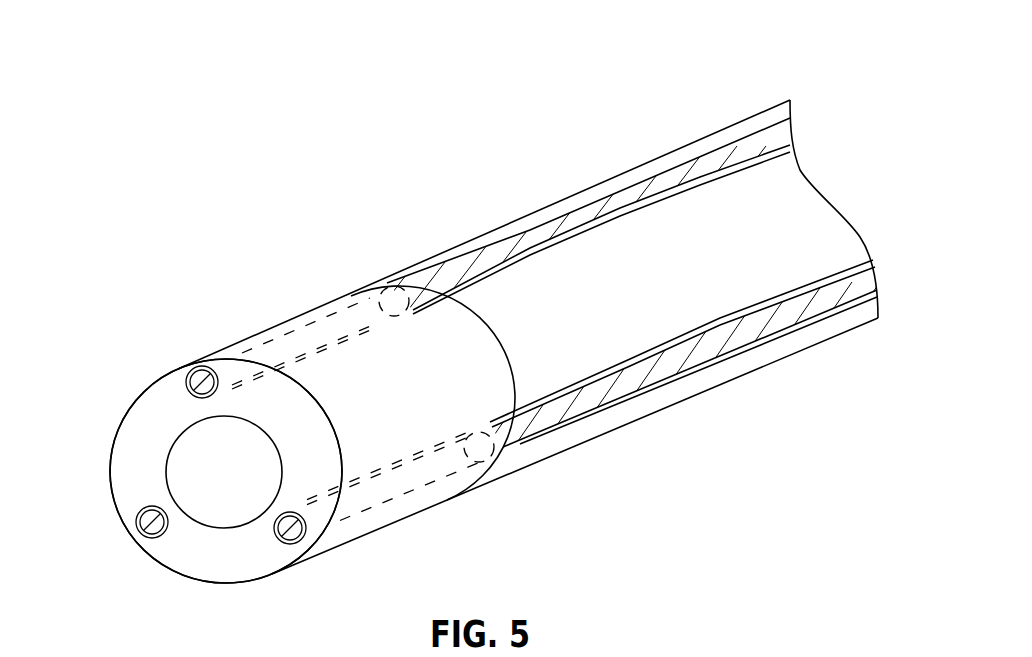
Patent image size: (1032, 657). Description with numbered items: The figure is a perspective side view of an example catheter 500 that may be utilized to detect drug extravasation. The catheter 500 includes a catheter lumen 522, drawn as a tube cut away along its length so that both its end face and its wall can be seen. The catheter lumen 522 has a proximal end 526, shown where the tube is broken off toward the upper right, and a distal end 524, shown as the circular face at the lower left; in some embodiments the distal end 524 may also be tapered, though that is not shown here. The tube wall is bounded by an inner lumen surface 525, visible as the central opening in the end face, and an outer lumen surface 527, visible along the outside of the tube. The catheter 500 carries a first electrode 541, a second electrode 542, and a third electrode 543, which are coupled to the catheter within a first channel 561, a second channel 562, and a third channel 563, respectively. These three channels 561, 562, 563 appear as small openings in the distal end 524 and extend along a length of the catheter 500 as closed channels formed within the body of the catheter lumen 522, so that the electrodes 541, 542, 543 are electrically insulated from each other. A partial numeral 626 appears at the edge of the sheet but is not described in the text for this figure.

The catheter 500 is at (175, 141).
The catheter lumen 522 is at (616, 231).
The distal end 524 is at (242, 600).
The inner lumen surface 525 is at (217, 498).
The proximal end 526 is at (790, 77).
The outer lumen surface 527 is at (514, 227).
The first electrode 541 is at (447, 268).
The second electrode 542 is at (687, 355).
The third electrode 543 is at (147, 510).
The first channel 561 is at (182, 348).
The second channel 562 is at (318, 563).
The third channel 563 is at (122, 543).
The catheter body (adjacent figure) 626 is at (763, 652).